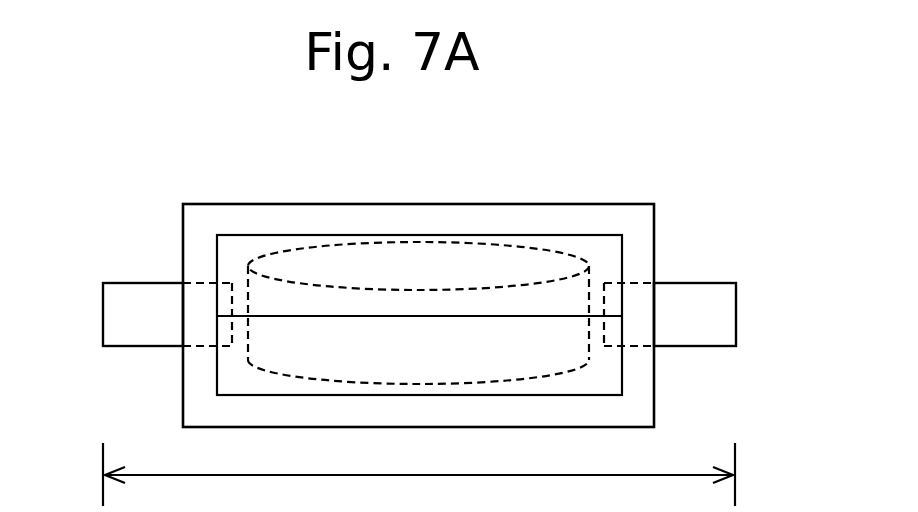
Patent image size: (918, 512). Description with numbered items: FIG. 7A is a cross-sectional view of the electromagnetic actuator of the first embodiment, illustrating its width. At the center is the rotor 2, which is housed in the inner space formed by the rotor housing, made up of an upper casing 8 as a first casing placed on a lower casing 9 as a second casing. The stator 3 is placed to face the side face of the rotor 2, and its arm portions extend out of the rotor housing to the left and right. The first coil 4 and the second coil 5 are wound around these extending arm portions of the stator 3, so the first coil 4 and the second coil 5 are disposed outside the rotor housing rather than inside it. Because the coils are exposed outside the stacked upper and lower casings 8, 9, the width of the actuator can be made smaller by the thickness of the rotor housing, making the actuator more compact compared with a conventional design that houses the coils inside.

The rotor 2 is at (347, 260).
The stator 3 is at (419, 314).
The first coil 4 is at (135, 282).
The second coil 5 is at (692, 282).
The upper casing 8 is at (473, 203).
The lower casing 9 is at (197, 370).